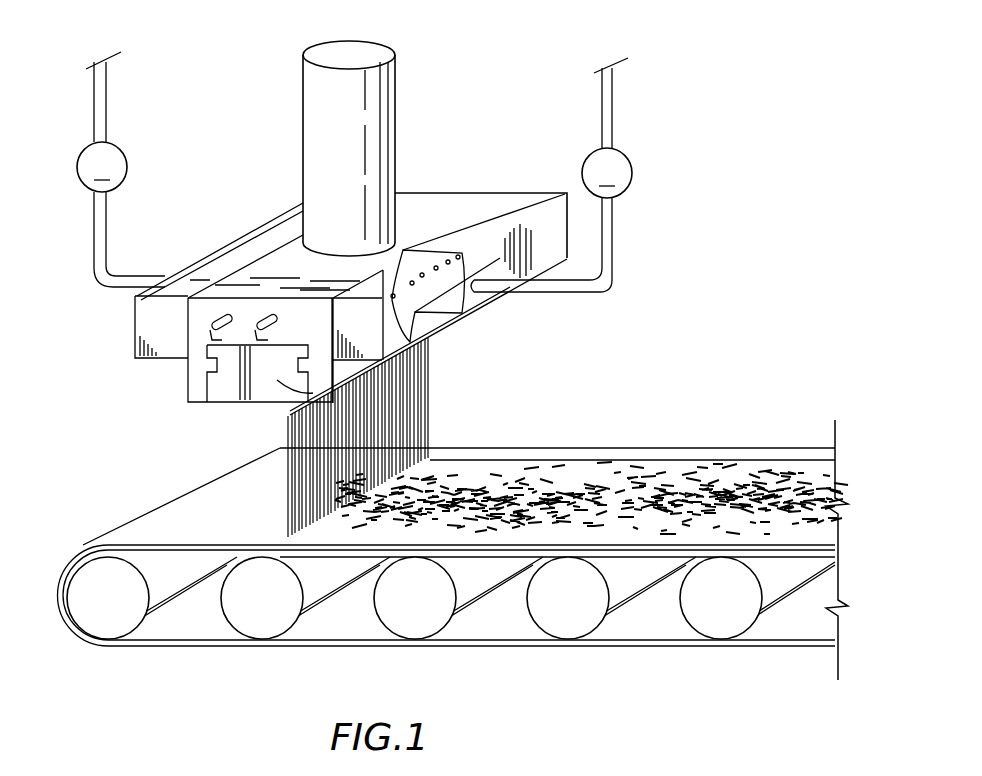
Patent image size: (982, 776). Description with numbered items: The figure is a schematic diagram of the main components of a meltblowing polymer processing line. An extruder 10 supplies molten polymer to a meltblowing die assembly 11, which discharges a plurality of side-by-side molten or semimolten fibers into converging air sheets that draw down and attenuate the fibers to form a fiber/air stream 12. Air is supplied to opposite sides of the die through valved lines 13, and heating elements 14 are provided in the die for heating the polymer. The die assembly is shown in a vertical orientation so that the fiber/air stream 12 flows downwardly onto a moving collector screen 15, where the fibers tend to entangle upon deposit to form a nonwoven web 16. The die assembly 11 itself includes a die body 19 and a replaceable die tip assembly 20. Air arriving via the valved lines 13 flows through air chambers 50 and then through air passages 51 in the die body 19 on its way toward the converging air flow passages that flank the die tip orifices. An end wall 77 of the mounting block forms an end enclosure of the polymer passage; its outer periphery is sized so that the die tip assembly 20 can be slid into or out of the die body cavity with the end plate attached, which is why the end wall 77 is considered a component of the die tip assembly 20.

The extruder 10 is at (396, 88).
The meltblowing die assembly 11 is at (472, 188).
The fiber/air stream 12 is at (432, 424).
The valved lines 13 is at (724, 91).
The heating elements 14 is at (268, 316).
The moving collector screen 15 is at (448, 531).
The nonwoven web 16 is at (681, 478).
The die body 19 is at (287, 258).
The replaceable die tip assembly 20 is at (205, 398).
The air chambers 50 is at (487, 306).
The air passages 51 is at (436, 266).
The end wall 77 is at (345, 388).